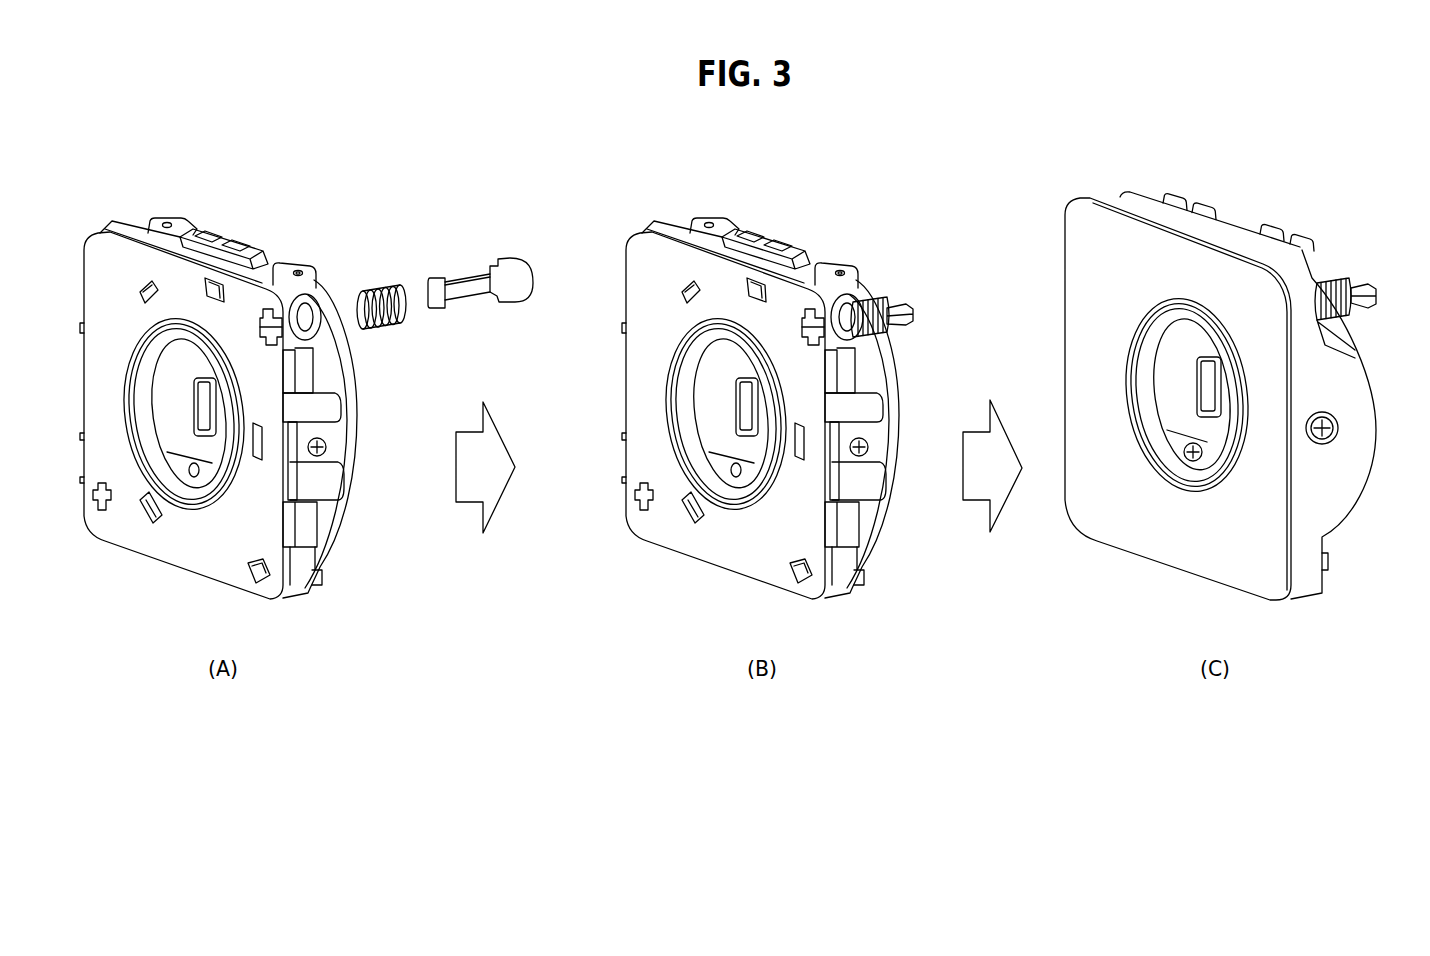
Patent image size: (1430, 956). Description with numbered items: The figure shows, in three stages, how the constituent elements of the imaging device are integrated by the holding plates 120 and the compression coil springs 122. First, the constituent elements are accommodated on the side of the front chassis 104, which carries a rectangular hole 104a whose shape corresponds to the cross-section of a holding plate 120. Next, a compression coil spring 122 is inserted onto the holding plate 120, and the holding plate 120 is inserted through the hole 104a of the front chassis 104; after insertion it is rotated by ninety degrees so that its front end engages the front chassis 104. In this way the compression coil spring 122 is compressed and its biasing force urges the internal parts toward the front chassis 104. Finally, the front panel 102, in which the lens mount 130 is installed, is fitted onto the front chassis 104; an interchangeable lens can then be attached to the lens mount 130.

The front panel 102 is at (1090, 227).
The front chassis 104 is at (118, 257).
The hole of the front chassis 104a is at (265, 300).
The holding plate 120 is at (464, 288).
The compression coil spring 122 is at (378, 288).
The lens mount 130 is at (184, 498).